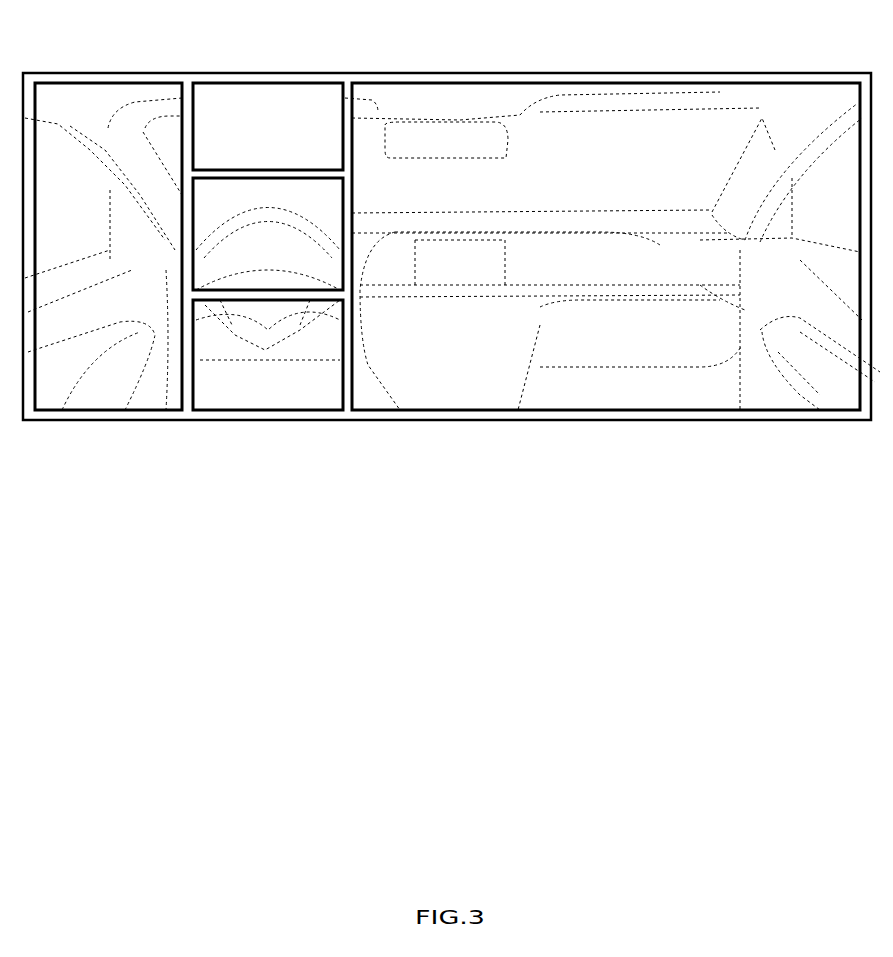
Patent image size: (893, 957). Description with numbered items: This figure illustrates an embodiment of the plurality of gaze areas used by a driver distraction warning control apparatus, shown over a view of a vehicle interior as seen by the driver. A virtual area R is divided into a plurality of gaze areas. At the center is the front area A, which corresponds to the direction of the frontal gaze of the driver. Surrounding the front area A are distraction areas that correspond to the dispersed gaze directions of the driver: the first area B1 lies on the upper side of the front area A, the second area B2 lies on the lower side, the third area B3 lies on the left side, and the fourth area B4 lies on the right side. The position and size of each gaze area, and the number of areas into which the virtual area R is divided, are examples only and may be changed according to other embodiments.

The virtual area R is at (446, 72).
The front area A is at (268, 234).
The first area B1 is at (268, 126).
The second area B2 is at (268, 355).
The third area B3 is at (108, 246).
The fourth area B4 is at (606, 246).